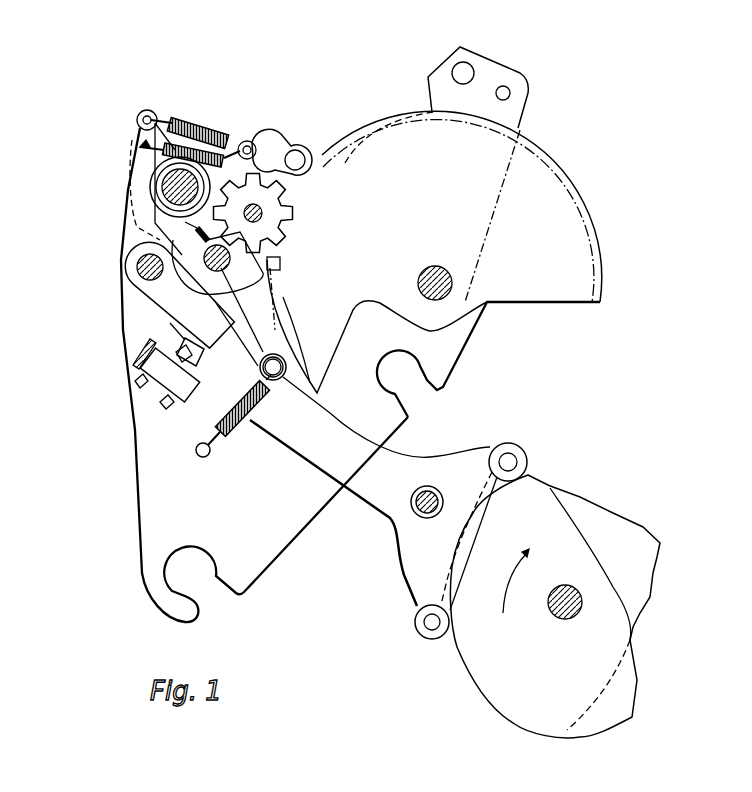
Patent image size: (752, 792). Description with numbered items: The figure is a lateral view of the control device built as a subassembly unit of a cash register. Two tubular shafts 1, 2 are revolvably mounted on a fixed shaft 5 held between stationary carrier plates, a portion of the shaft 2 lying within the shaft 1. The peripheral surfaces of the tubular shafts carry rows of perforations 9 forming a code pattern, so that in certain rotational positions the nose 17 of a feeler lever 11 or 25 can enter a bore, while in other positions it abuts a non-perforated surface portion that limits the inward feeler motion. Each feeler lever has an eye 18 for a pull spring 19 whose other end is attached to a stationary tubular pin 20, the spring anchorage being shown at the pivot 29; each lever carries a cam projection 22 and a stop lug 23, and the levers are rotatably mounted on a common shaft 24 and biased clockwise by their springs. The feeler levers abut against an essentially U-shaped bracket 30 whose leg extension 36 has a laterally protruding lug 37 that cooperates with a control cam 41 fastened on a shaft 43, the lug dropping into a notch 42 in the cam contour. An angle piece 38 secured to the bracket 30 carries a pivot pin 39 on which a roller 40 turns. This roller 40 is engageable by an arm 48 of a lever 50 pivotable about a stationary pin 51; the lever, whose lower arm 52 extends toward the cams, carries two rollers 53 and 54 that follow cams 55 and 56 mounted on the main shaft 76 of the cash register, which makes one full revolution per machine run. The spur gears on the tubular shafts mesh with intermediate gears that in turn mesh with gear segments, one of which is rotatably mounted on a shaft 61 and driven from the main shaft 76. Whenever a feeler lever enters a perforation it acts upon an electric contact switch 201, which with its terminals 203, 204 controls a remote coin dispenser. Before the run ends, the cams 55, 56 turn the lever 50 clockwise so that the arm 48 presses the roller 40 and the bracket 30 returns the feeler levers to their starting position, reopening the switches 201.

The tubular shaft 1 is at (218, 142).
The tubular shaft 2 is at (263, 143).
The fixed shaft 5 is at (162, 179).
The perforations 9 is at (156, 187).
The feeler lever 11 is at (150, 140).
The nose 17 is at (160, 215).
The eye 18 is at (147, 110).
The pull spring 19 is at (197, 122).
The stationary tubular pin 20 is at (248, 140).
The cam projection 22 is at (198, 364).
The stop lug 23 is at (290, 353).
The shaft 24 is at (145, 277).
The feeler lever 25 is at (132, 140).
The pivot 29 is at (140, 116).
The bracket 30 is at (170, 323).
The extension 36 is at (195, 232).
The lug 37 is at (137, 265).
The angle piece 38 is at (247, 403).
The pivot pin 39 is at (282, 378).
The roller 40 is at (274, 381).
The control cam 41 is at (245, 250).
The notch 42 is at (225, 268).
The shaft 43 is at (280, 294).
The arm 48 is at (253, 418).
The lever 50 is at (433, 453).
The stationary pin 51 is at (415, 512).
The arm 52 is at (400, 593).
The roller 53 is at (422, 645).
The roller 54 is at (520, 443).
The cam 55 is at (477, 677).
The cam 56 is at (586, 488).
The shaft 61 is at (447, 292).
The main shaft 76 is at (580, 588).
The electric contact switches 201 is at (138, 366).
The terminal 203 is at (140, 384).
The terminal 204 is at (165, 404).